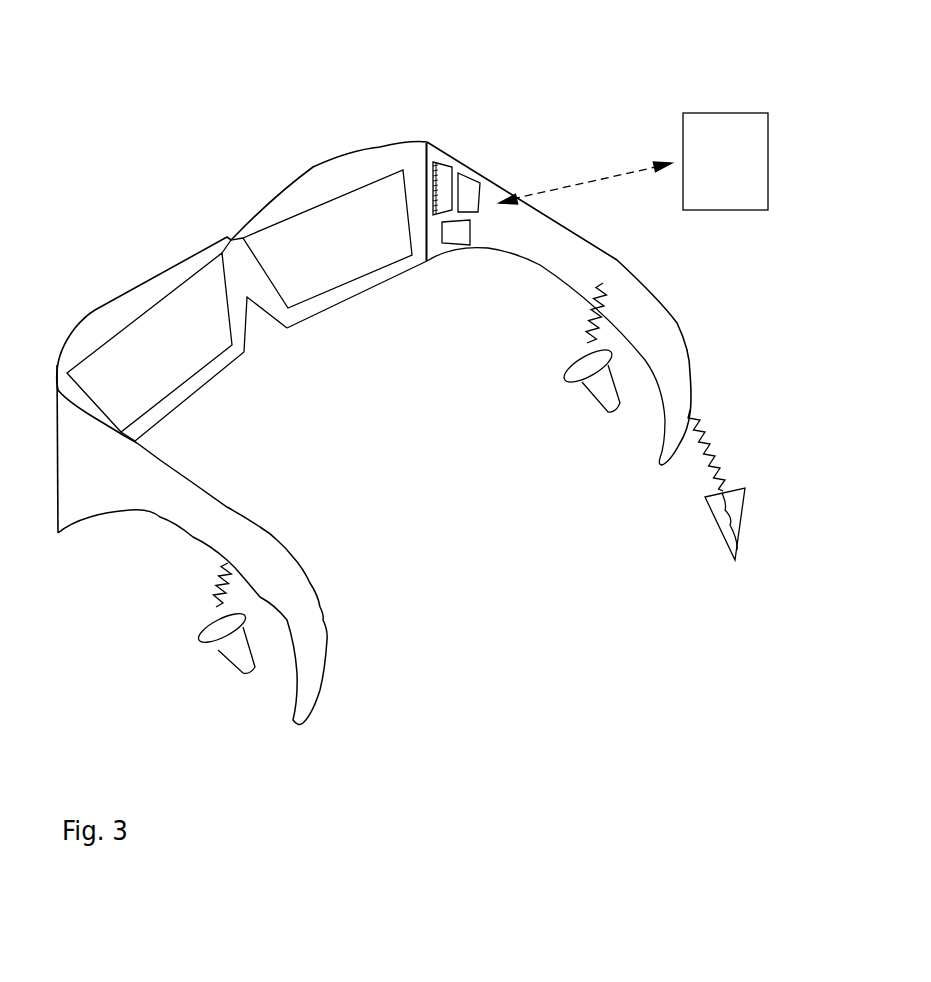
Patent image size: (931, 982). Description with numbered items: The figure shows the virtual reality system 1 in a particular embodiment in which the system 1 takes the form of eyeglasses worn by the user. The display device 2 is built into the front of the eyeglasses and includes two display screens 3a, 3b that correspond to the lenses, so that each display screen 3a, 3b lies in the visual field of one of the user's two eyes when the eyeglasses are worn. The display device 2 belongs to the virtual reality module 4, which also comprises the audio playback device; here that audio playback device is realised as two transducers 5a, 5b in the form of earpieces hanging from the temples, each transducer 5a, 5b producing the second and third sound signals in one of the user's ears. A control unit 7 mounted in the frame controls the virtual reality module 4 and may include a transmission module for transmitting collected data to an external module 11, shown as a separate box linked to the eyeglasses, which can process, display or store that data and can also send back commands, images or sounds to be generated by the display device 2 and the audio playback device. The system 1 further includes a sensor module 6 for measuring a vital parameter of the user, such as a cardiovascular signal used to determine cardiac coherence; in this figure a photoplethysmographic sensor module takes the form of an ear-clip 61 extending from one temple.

The virtual reality system 1 is at (536, 113).
The display device 2 is at (232, 245).
The display screen 3a is at (150, 330).
The display screen 3b is at (337, 223).
The virtual reality module 4 is at (443, 170).
The control unit 7 is at (472, 188).
The sensor module 6 is at (457, 233).
The transducer 5a is at (230, 657).
The transducer 5b is at (598, 393).
The ear-clip 61 is at (720, 525).
The external module 11 is at (727, 140).